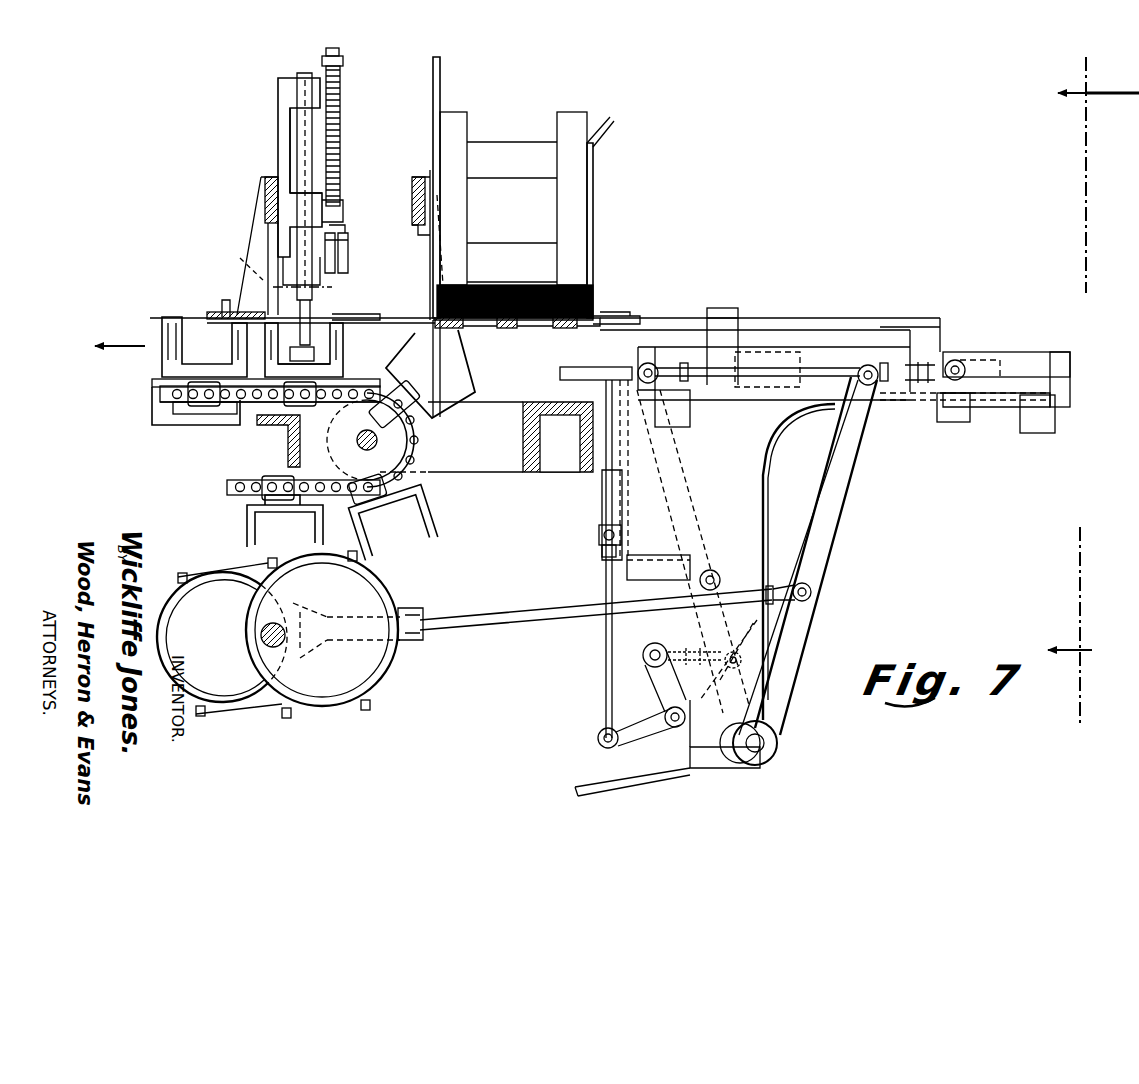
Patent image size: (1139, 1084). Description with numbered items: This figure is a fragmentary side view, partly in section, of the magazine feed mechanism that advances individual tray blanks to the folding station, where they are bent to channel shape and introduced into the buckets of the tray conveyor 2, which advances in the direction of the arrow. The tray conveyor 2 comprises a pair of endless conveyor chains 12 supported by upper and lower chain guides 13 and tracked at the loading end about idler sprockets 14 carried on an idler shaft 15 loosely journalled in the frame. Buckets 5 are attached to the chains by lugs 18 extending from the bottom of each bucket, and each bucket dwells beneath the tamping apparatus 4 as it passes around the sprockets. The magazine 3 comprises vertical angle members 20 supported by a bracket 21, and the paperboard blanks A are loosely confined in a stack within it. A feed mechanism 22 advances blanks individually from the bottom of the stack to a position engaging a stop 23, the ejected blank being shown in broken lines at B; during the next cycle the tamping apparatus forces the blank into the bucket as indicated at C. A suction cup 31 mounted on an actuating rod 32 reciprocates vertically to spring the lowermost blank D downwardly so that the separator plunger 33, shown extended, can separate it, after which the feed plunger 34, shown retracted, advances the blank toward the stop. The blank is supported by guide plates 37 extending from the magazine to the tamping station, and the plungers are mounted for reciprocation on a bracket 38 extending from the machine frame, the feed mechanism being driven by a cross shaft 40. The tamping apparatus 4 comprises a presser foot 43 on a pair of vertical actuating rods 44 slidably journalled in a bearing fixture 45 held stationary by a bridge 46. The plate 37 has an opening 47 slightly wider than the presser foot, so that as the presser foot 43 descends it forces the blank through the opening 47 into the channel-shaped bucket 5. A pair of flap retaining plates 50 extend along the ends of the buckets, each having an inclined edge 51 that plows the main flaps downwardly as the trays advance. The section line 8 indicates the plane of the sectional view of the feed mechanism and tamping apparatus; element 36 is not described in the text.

The tray conveyor 2 is at (262, 405).
The magazine 3 is at (600, 152).
The tray forming and tamping apparatus 4 is at (245, 137).
The bucket 5 is at (162, 333).
The section line for FIGURE 8 is at (1093, 392).
The conveyor chain 12 is at (232, 482).
The chain guide 13 is at (158, 378).
The idler sprocket 14 is at (395, 452).
The idler shaft 15 is at (372, 438).
The lug 18 is at (275, 402).
The vertical angle member 20 is at (577, 208).
The bracket 21 is at (428, 250).
The feed mechanism 22 is at (1010, 348).
The stop 23 is at (222, 308).
The suction cup 31 is at (585, 365).
The actuating rod 32 is at (606, 513).
The separator plunger 33 is at (500, 326).
The feed plunger 34 is at (760, 320).
The plate 36 is at (598, 312).
The guide plate 37 is at (362, 330).
The bracket 38 is at (980, 352).
The cross shaft 40 is at (282, 640).
The presser foot 43 is at (340, 270).
The vertical actuating rod 44 is at (300, 150).
The bearing fixture 45 is at (285, 95).
The bridge 46 is at (256, 212).
The opening 47 is at (322, 315).
The flap retaining plate 50 is at (160, 410).
The inclined edge 51 is at (212, 412).
The paperboard blanks A is at (565, 282).
The ejected blank B is at (241, 260).
The blank in bucket C is at (160, 312).
The lowermost blank D is at (512, 326).